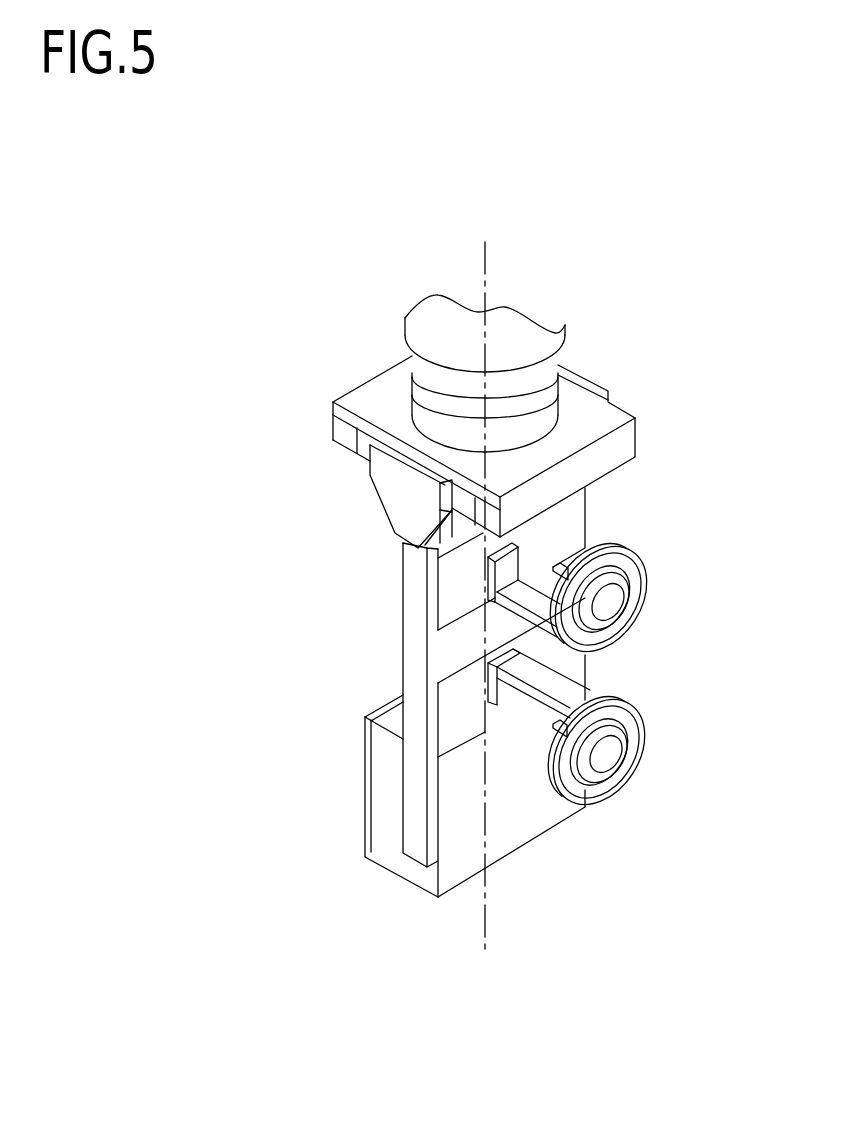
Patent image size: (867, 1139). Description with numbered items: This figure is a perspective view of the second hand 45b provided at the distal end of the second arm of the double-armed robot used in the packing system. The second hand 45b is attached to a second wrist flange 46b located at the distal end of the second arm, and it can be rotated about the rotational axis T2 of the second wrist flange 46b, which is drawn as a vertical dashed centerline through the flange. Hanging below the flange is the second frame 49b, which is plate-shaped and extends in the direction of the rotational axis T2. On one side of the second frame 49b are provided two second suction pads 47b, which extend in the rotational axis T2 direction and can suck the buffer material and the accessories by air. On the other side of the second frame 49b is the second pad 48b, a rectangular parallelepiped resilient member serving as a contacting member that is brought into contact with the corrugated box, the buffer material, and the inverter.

The second hand 45b is at (318, 297).
The second wrist flange 46b is at (548, 410).
The second suction pads 47b is at (652, 565).
The second pad 48b is at (385, 798).
The second frame 49b is at (417, 643).
The rotational axis T2 is at (484, 579).